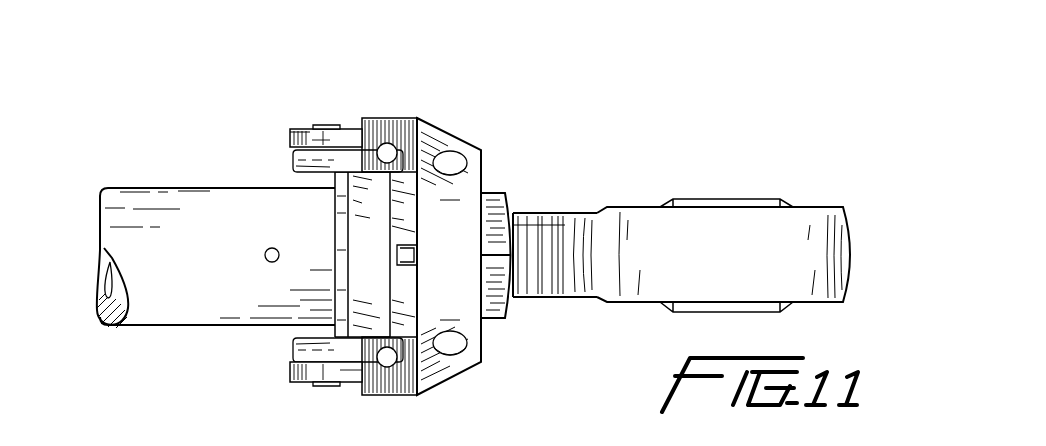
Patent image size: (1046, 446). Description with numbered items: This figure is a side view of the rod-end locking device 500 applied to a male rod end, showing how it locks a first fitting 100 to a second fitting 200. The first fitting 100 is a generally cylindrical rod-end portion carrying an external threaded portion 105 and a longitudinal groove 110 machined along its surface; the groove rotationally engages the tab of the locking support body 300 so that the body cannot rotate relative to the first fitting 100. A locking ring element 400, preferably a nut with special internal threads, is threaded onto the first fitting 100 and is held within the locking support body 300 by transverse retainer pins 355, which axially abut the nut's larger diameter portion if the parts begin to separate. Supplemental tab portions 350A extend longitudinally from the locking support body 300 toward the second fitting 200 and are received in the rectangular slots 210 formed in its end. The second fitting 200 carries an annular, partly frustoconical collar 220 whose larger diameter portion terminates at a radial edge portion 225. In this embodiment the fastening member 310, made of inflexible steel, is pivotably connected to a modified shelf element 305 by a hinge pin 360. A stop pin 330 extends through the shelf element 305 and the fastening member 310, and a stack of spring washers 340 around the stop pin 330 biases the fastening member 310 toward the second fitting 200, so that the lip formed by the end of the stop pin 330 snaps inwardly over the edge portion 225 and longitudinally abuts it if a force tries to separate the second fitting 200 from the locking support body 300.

The first fitting 100 is at (747, 243).
The external threaded portion 105 is at (543, 293).
The longitudinal groove 110 is at (580, 222).
The second fitting 200 is at (133, 200).
The slots 210 is at (396, 256).
The collar 220 is at (360, 273).
The edge portion 225 is at (325, 180).
The locking support body 300 is at (448, 142).
The shelf element 305 is at (348, 128).
The fastening member 310 is at (312, 150).
The stop pin 330 is at (326, 126).
The spring washers 340 is at (307, 128).
The supplemental tab portions 350A is at (410, 255).
The retainer pins 355 is at (455, 165).
The hinge pin 360 is at (390, 152).
The locking ring element 400 is at (513, 200).
The rod-end locking device 500 is at (652, 87).